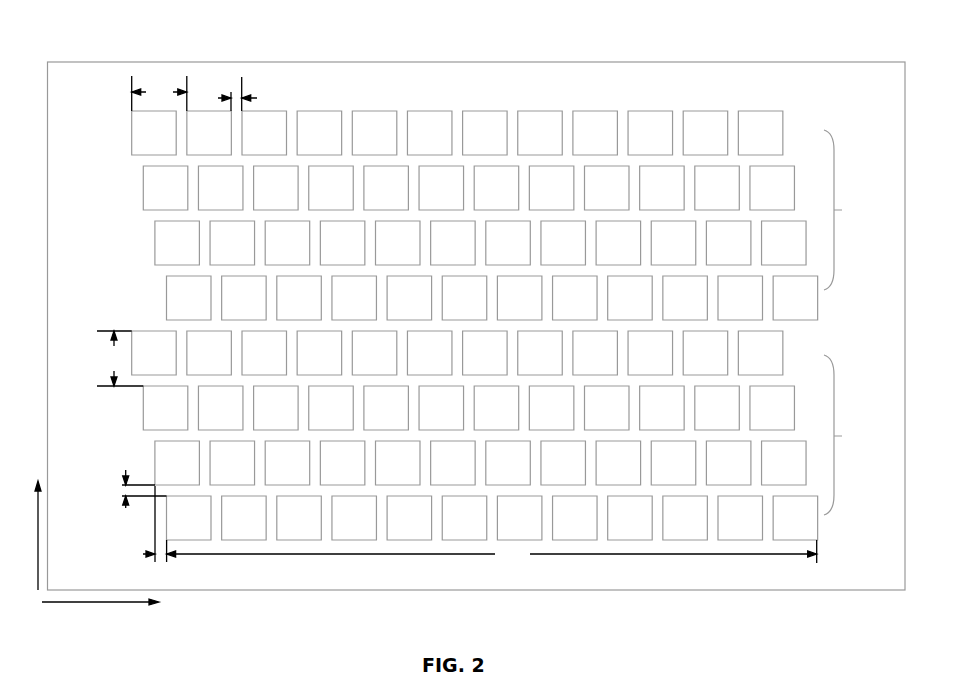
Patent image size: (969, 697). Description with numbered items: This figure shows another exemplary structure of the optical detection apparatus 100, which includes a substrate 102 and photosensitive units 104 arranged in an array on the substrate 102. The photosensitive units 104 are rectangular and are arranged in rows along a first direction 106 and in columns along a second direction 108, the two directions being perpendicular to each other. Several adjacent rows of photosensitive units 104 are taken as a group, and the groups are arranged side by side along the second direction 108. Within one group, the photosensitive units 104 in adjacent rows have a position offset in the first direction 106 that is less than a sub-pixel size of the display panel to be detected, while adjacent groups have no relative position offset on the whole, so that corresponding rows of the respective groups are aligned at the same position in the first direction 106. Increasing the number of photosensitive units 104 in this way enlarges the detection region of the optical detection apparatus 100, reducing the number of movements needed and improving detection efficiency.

The optical detection apparatus 100 is at (477, 319).
The substrate 102 is at (414, 62).
The photosensitive units 104 is at (428, 112).
The first direction 106 is at (100, 614).
The second direction 108 is at (32, 525).